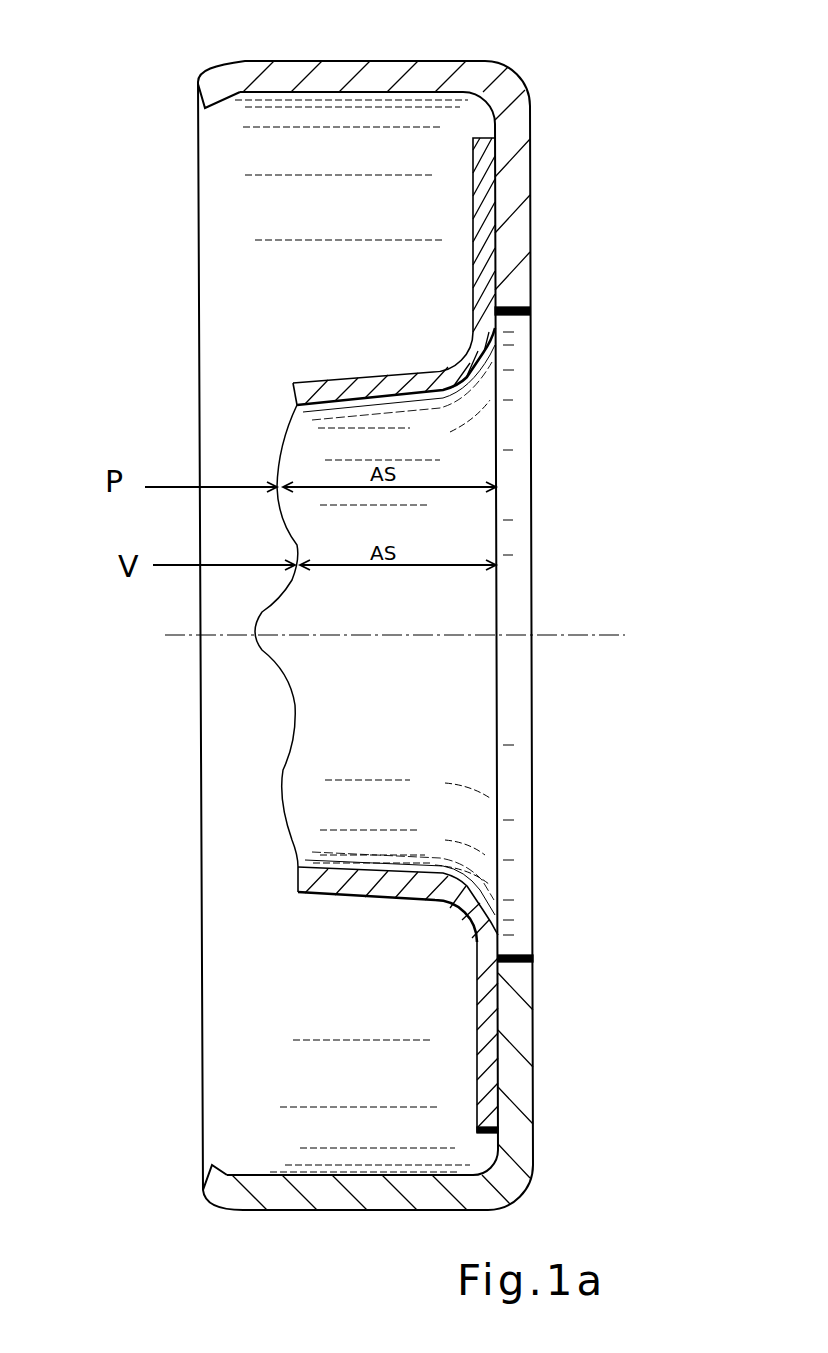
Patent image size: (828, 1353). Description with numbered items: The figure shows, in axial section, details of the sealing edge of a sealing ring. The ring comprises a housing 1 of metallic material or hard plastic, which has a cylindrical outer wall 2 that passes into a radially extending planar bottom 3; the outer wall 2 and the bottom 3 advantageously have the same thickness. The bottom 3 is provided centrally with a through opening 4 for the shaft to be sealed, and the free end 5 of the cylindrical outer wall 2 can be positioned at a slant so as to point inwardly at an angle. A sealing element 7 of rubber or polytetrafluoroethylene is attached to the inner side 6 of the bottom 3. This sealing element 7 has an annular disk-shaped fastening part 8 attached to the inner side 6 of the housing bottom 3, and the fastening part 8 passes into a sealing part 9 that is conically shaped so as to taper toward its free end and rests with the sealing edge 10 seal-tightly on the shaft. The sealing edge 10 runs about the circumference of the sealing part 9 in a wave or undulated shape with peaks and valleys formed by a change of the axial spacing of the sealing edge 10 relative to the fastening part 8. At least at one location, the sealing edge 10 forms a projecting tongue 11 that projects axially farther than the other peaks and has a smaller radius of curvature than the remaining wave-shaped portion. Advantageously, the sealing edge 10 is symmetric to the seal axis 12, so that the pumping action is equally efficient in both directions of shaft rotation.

The housing 1 is at (333, 82).
The cylindrical outer wall 2 is at (374, 82).
The bottom 3 is at (507, 203).
The through opening 4 is at (518, 512).
The free end 5 is at (215, 88).
The inner side 6 is at (485, 1148).
The sealing element 7 is at (373, 345).
The fastening part 8 is at (488, 1040).
The sealing part 9 is at (307, 893).
The sealing edge 10 is at (293, 875).
The tongue 11 is at (263, 645).
The seal axis 12 is at (598, 633).